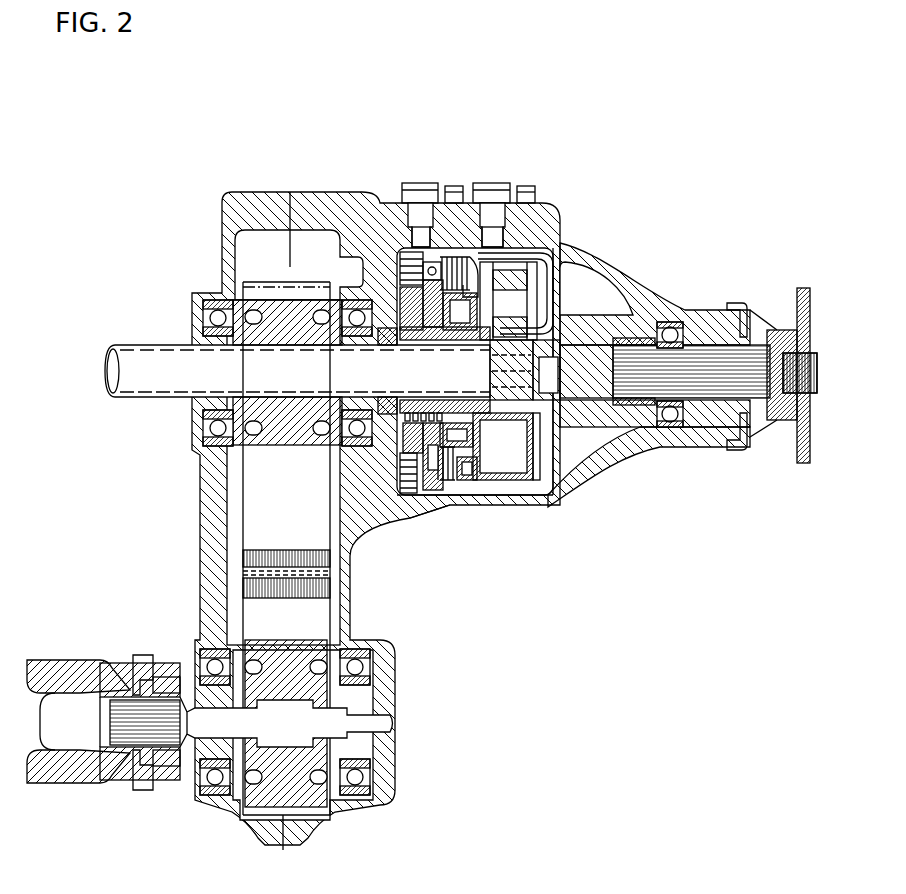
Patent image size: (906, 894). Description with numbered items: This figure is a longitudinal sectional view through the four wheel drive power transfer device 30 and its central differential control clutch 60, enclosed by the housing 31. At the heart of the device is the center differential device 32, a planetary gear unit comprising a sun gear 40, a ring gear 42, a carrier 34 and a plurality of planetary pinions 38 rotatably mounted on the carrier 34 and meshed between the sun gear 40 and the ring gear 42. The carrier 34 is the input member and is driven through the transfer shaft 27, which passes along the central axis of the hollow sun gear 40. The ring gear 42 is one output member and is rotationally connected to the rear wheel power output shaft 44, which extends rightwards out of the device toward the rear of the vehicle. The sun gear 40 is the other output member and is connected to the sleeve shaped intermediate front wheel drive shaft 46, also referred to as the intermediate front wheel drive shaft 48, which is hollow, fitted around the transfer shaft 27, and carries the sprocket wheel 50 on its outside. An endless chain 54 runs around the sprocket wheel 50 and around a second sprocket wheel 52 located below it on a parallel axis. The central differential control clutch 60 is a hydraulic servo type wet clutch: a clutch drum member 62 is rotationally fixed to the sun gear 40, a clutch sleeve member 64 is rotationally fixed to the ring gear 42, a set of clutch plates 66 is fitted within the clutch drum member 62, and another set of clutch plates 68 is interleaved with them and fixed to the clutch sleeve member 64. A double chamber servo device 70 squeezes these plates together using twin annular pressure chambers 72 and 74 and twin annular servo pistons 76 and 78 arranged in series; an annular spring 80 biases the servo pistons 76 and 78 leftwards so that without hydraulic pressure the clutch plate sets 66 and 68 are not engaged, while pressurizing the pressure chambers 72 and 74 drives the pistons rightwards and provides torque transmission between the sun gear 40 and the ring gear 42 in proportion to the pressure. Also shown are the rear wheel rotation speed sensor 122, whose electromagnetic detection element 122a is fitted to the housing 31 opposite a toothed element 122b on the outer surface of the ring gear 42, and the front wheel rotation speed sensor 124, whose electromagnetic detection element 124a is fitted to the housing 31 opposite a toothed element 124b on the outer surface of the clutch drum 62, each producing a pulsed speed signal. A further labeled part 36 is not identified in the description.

The transfer shaft 27 is at (138, 387).
The four wheel drive power transfer device 30 is at (420, 517).
The housing 31 is at (452, 220).
The center differential device 32 is at (562, 257).
The carrier 34 is at (560, 313).
The bearing support cone 36 is at (553, 287).
The planetary pinions 38 is at (513, 263).
The sun gear 40 is at (490, 333).
The ring gear 42 is at (532, 257).
The rear wheel power output shaft 44 is at (598, 398).
The intermediate front wheel drive shaft 46 is at (393, 337).
The intermediate front wheel drive shaft 48 is at (200, 760).
The sprocket wheel 50 is at (285, 438).
The sprocket wheel 52 is at (297, 650).
The endless chain 54 is at (318, 573).
The central differential control clutch 60 is at (465, 493).
The clutch drum member 62 is at (452, 493).
The clutch sleeve member 64 is at (480, 450).
The clutch plates 66 is at (433, 492).
The clutch plates 68 is at (479, 470).
The servo device 70 is at (412, 470).
The pressure chamber 72 is at (400, 440).
The pressure chamber 74 is at (403, 455).
The servo piston 76 is at (413, 333).
The servo piston 78 is at (432, 330).
The spring 80 is at (462, 305).
The rear wheel rotation speed sensor 122 is at (490, 220).
The electromagnetic detection element 122a is at (532, 240).
The toothed element 122b is at (490, 492).
The front wheel rotation speed sensor 124 is at (418, 220).
The electromagnetic detection element 124a is at (413, 240).
The toothed element 124b is at (410, 498).